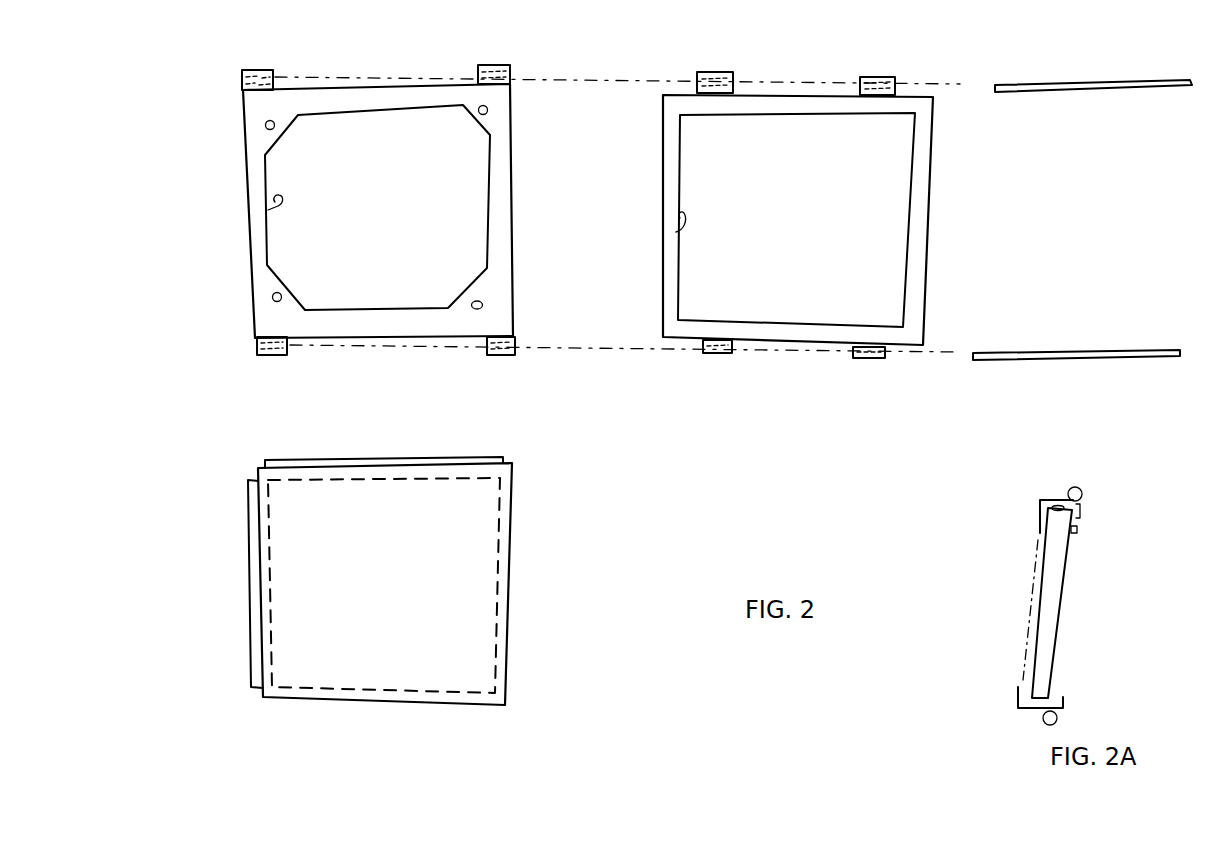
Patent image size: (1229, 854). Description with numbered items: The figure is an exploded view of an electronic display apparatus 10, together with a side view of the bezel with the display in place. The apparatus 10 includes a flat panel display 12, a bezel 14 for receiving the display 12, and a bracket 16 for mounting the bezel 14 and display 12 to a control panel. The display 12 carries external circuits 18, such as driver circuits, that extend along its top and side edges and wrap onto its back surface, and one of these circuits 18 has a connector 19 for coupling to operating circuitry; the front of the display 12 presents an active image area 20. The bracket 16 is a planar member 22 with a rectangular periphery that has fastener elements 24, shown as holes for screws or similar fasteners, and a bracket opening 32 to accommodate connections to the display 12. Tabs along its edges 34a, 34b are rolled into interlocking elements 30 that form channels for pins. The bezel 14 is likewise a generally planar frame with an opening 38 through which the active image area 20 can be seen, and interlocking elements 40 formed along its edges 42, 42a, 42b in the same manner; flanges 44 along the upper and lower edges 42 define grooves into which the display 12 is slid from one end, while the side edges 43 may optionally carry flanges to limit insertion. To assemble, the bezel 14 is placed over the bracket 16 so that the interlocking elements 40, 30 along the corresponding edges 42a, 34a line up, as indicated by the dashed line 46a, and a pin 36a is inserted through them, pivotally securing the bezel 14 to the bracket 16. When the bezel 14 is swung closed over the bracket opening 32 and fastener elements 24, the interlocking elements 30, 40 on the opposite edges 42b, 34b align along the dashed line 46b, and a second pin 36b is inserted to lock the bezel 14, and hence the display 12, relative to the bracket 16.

In FIG. 2, the apparatus 10 is at (685, 466).
In FIG. 2, the flat panel display 12 is at (512, 590).
In FIG. 2A, the flat panel display 12 is at (1068, 563).
In FIG. 2, the bezel 14 is at (808, 220).
In FIG. 2A, the bezel 14 is at (1033, 510).
In FIG. 2, the bracket 16 is at (408, 211).
In FIG. 2, the external circuits 18 is at (385, 452).
In FIG. 2A, the external circuits 18 is at (1083, 508).
In FIG. 2A, the connector 19 is at (1082, 531).
In FIG. 2, the active image area 20 is at (508, 537).
In FIG. 2A, the active image area 20 is at (1037, 610).
In FIG. 2, the planar member 22 is at (510, 152).
In FIG. 2, the fastener elements 24 is at (265, 127).
In FIG. 2, the interlocking elements 30 is at (258, 70).
In FIG. 2, the bracket opening 32 is at (270, 206).
In FIG. 2, the edge of the planar member 34a is at (376, 83).
In FIG. 2, the edge of the planar member 34b is at (388, 338).
In FIG. 2, the pin 36a is at (1088, 92).
In FIG. 2, the pin 36b is at (1073, 362).
In FIG. 2, the opening 38 is at (678, 230).
In FIG. 2A, the opening 38 is at (1018, 680).
In FIG. 2, the interlocking elements 40 is at (718, 72).
In FIG. 2A, the interlocking elements 40 is at (1085, 492).
In FIG. 2A, the edges of the bezel 42 is at (1053, 498).
In FIG. 2, the edge of the bezel 42a is at (800, 93).
In FIG. 2, the edge of the bezel 42b is at (790, 340).
In FIG. 2, the side edges 43 is at (662, 170).
In FIG. 2A, the flanges 44 is at (1085, 504).
In FIG. 2, the dashed line 46a is at (618, 80).
In FIG. 2, the dashed line 46b is at (604, 348).